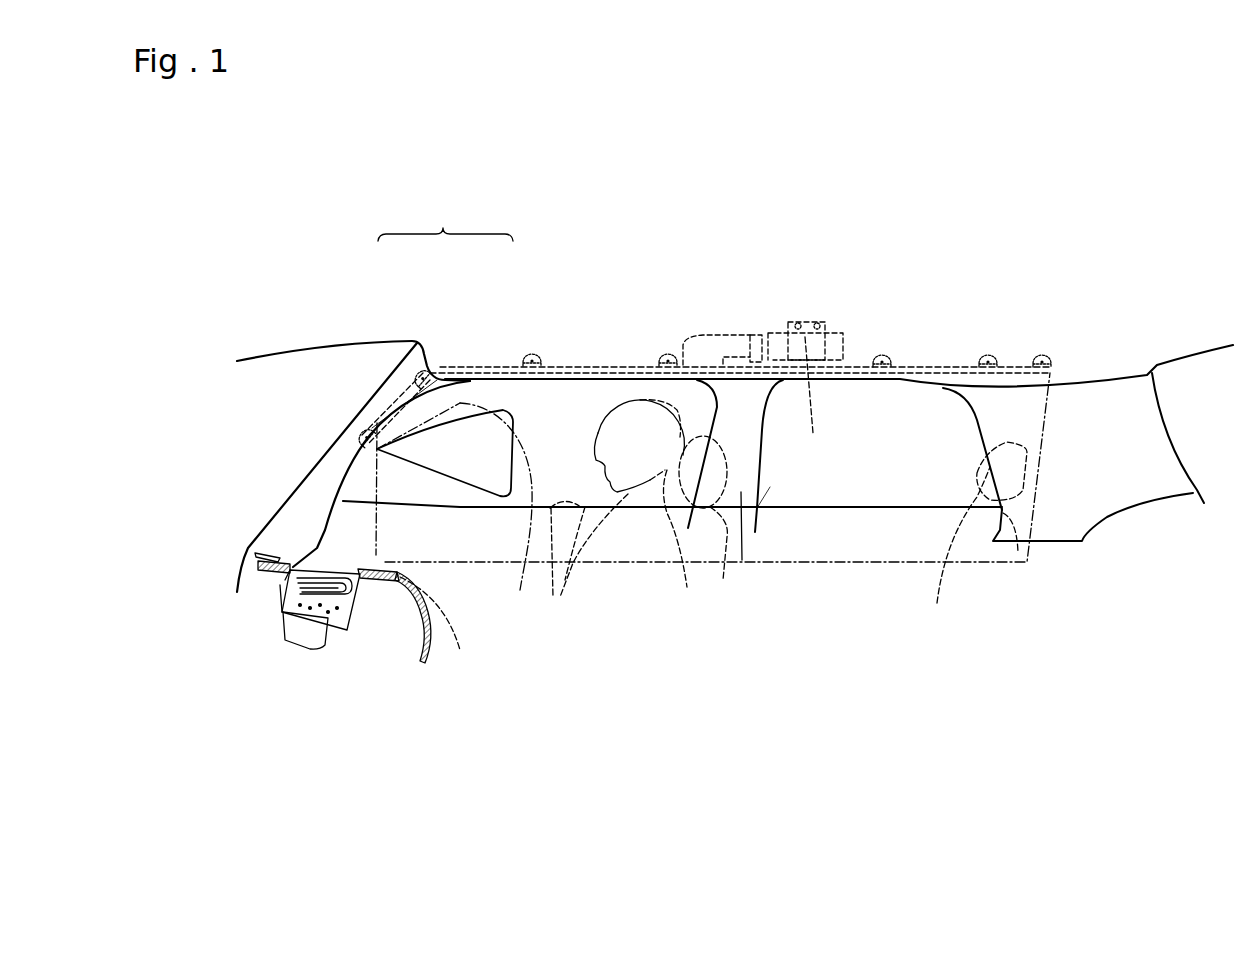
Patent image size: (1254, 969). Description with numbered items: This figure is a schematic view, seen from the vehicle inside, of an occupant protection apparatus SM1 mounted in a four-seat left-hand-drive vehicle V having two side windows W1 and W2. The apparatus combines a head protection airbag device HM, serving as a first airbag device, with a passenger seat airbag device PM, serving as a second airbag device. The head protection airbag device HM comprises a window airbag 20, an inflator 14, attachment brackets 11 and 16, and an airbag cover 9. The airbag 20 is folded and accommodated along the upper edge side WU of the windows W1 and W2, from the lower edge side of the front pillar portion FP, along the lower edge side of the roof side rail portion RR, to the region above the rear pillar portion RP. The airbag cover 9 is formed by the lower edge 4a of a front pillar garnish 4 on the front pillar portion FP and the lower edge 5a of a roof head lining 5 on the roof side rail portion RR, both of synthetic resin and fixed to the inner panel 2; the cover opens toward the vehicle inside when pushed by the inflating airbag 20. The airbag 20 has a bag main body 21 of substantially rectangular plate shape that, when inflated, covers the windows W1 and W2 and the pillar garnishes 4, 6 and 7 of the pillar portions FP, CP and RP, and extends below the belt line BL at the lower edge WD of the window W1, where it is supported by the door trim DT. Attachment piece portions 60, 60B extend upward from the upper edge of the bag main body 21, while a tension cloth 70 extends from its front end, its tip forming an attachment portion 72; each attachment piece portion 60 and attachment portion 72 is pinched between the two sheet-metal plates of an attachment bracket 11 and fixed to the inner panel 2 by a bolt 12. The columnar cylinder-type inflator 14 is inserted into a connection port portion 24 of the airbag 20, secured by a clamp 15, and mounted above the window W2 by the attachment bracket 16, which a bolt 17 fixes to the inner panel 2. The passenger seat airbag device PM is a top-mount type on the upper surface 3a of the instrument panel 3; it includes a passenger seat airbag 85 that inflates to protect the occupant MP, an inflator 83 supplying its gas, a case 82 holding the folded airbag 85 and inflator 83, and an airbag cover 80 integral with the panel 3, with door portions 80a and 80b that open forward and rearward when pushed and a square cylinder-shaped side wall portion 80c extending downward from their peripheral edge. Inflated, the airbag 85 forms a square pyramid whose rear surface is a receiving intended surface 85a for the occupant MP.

The inner panel 2 is at (360, 290).
The instrument panel 3 is at (433, 665).
The upper surface of instrument panel 3a is at (458, 652).
The front pillar garnish 4 is at (320, 482).
The lower edge of front pillar garnish 4a is at (392, 360).
The roof head lining 5 is at (528, 313).
The lower edge of roof head lining 5a is at (505, 362).
The center pillar garnish 6 is at (742, 560).
The rear pillar garnish 7 is at (1060, 547).
The airbag cover 9 is at (445, 220).
The attachment bracket 11 is at (383, 425).
The bolt 12 is at (355, 428).
The inflator 14 is at (843, 342).
The clamp 15 is at (753, 335).
The attachment bracket 16 is at (818, 401).
The bolt 17 is at (817, 323).
The window airbag 20 is at (940, 370).
The bag main body 21 is at (982, 573).
The connection port portion 24 is at (718, 335).
The attachment piece portion 60 is at (662, 360).
The rear clip 60B is at (1057, 363).
The tension cloth 70 is at (465, 437).
The attachment portion 72 is at (353, 447).
The airbag cover 80 is at (306, 602).
The door portion 80a is at (243, 520).
The door portion 80b is at (373, 563).
The side wall portion 80c is at (282, 575).
The case 82 is at (340, 637).
The inflator 83 is at (297, 635).
The passenger seat airbag 85 is at (370, 600).
The receiving intended surface 85a is at (540, 460).
The vehicle V is at (1150, 280).
The occupant protection apparatus SM1 is at (320, 272).
The front pillar portion FP is at (303, 447).
The roof side rail portion RR is at (540, 313).
The window upper edge WU is at (593, 373).
The head protection airbag device HM is at (1003, 297).
The belt line BL is at (553, 512).
The window W1 is at (686, 530).
The window W2 is at (897, 493).
The center pillar portion CP is at (770, 487).
The rear pillar portion RP is at (1137, 523).
The door trim DT is at (463, 525).
The lower edge of window WD is at (512, 517).
The occupant MP is at (623, 588).
The passenger seat airbag device PM is at (232, 667).